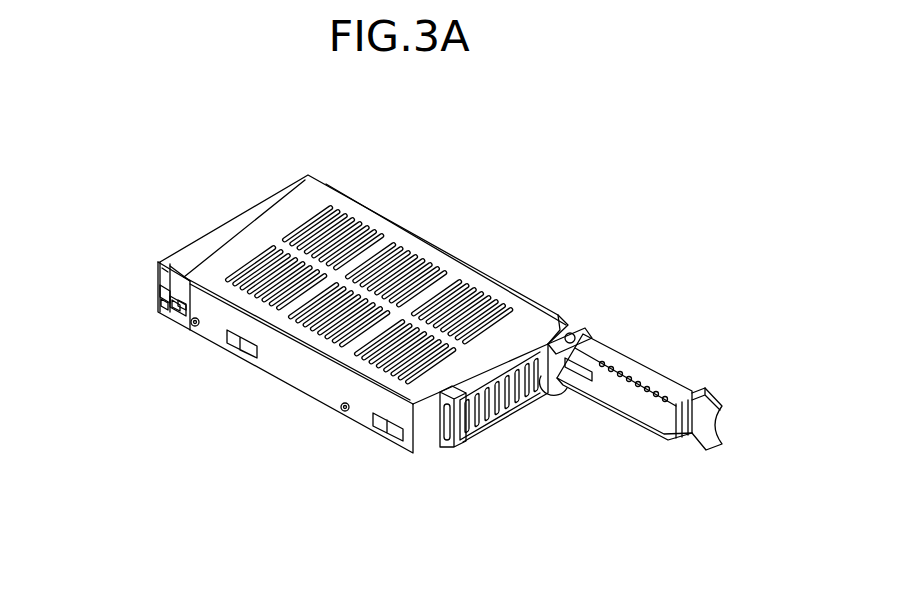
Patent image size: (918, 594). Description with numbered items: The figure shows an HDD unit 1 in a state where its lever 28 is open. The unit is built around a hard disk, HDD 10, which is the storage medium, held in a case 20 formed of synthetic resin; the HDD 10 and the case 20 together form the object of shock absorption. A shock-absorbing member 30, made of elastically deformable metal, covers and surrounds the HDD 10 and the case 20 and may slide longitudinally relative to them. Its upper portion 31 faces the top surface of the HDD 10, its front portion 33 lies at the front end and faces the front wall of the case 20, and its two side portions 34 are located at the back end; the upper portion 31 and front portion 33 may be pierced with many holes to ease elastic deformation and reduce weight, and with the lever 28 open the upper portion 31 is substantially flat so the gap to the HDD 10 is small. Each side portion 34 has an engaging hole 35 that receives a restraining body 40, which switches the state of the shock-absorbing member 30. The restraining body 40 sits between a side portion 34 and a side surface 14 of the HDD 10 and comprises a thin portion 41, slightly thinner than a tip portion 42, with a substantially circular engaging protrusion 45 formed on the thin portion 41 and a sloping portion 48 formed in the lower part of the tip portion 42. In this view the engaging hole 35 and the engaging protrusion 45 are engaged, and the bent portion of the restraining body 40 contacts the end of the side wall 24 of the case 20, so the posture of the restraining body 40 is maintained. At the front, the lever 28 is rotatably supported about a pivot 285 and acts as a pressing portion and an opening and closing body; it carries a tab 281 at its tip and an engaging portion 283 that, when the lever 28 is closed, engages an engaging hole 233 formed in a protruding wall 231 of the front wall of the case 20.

The HDD unit 1 is at (506, 197).
The hard disk (HDD) 10 is at (292, 182).
The side surface 14 is at (160, 262).
The case 20 is at (268, 378).
The side wall 24 is at (305, 382).
The lever 28 is at (642, 365).
The shock-absorbing member 30 is at (337, 185).
The upper portion 31 is at (520, 317).
The front portion 33 is at (498, 404).
The side portion 34 is at (180, 270).
The engaging hole 35 is at (182, 312).
The restraining body 40 is at (160, 310).
The thin portion 41 is at (162, 263).
The tip portion 42 is at (158, 286).
The engaging protrusion 45 is at (170, 312).
The sloping portion 48 is at (160, 303).
The protruding wall 231 is at (438, 428).
The engaging hole 233 is at (450, 442).
The tab 281 is at (702, 425).
The engaging portion 283 is at (685, 434).
The pivot 285 is at (578, 328).